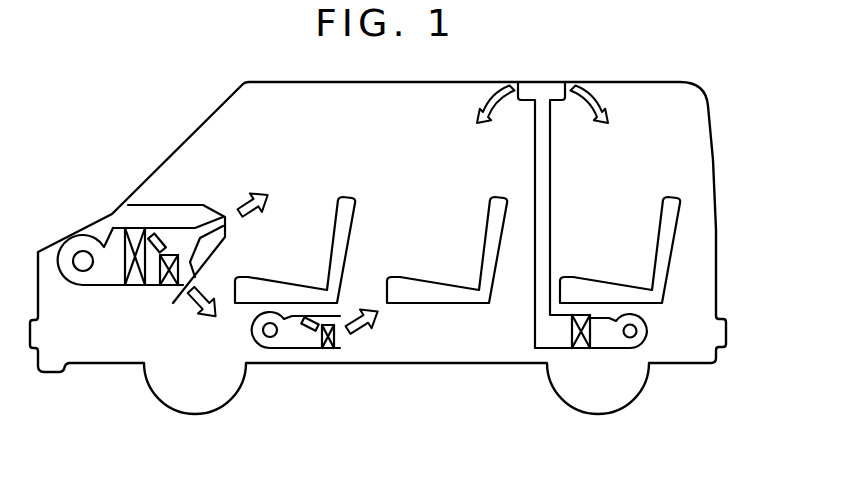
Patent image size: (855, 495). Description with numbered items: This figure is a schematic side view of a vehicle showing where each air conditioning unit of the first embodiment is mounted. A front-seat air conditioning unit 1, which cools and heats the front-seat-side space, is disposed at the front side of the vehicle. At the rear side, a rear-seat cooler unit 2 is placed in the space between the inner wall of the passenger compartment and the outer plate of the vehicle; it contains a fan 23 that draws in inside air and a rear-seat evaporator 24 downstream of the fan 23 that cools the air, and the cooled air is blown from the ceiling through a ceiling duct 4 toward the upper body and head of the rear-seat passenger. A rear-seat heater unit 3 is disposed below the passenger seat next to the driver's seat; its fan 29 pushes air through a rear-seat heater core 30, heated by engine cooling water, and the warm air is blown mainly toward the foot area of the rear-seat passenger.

The front-seat air conditioning unit 1 is at (112, 222).
The rear-seat cooler unit 2 is at (597, 381).
The rear-seat heater unit 3 is at (299, 373).
The ceiling duct 4 is at (550, 177).
The fan 23 is at (633, 334).
The rear-seat evaporator 24 is at (576, 331).
The fan 29 is at (267, 333).
The rear-seat heater core 30 is at (328, 342).